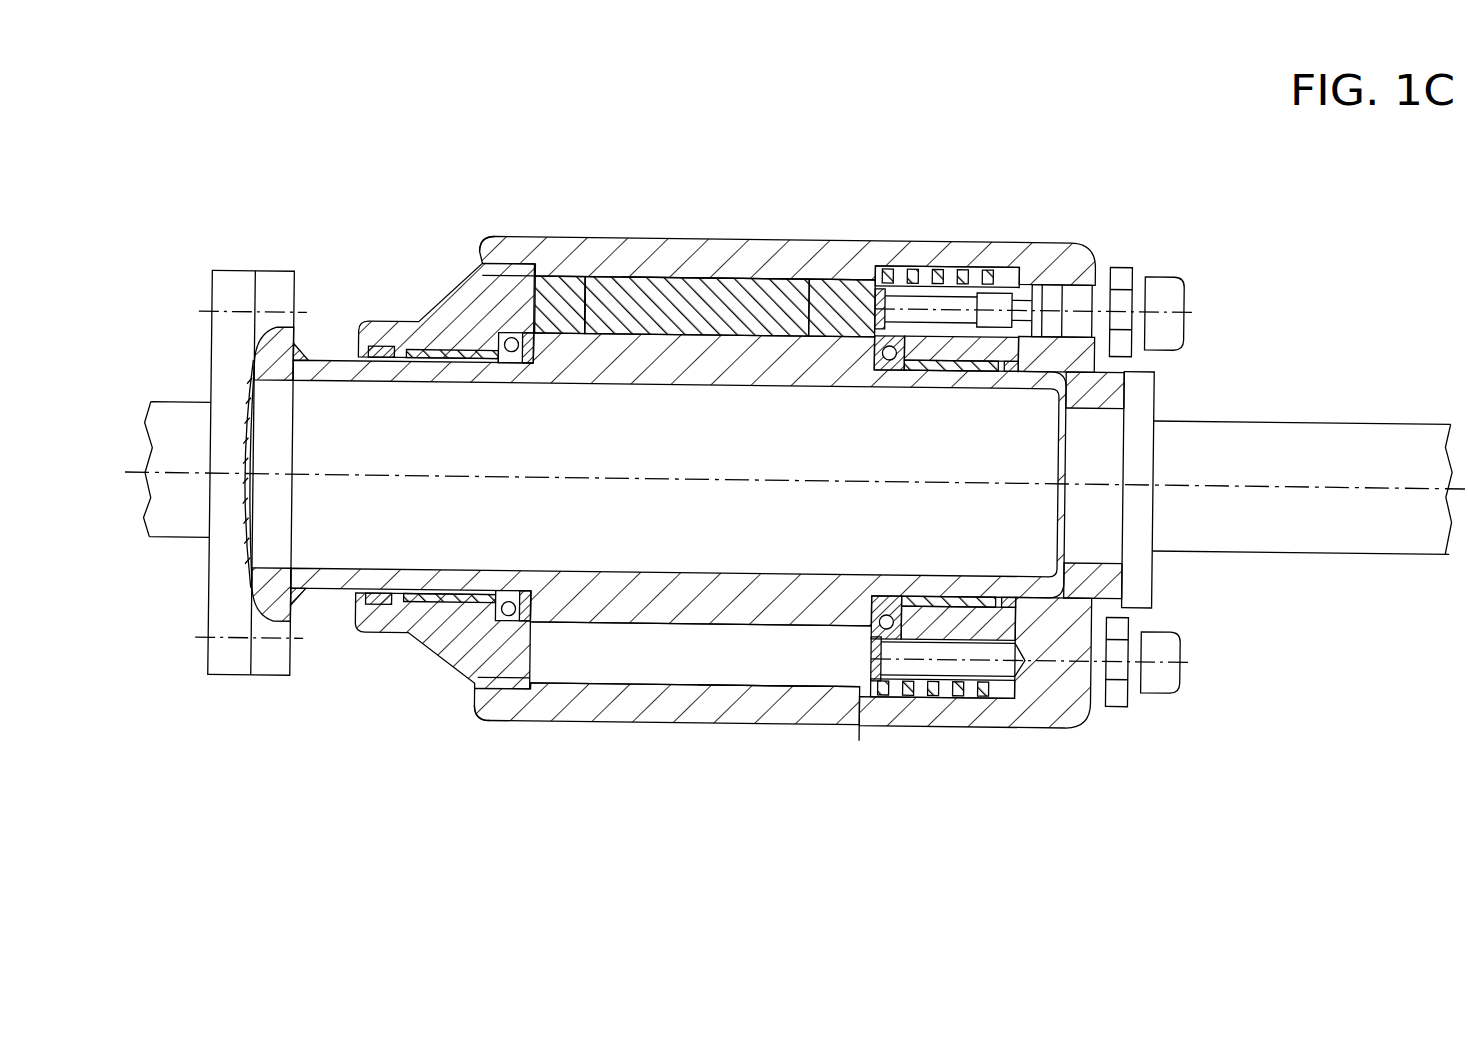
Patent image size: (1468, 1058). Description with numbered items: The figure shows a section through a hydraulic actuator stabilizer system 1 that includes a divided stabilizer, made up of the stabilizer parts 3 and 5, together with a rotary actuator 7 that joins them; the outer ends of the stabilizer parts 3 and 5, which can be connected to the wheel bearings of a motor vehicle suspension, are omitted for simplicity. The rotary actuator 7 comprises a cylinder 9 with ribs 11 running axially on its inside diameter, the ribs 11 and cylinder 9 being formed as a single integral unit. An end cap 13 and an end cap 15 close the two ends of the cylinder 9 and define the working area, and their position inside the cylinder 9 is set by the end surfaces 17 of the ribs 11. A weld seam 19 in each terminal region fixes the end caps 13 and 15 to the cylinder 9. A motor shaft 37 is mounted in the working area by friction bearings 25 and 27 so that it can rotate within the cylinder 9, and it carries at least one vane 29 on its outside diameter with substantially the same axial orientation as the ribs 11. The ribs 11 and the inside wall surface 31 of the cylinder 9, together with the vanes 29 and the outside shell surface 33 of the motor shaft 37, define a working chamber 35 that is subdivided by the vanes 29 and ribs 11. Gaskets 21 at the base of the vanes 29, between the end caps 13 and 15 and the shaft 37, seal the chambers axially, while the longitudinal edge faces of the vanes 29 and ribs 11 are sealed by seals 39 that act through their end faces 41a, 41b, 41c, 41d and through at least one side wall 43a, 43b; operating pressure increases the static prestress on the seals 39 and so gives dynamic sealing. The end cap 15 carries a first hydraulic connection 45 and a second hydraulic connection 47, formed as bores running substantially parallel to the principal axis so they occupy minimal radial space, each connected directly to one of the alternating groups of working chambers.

The hydraulic actuator stabilizer system 1 is at (335, 752).
The stabilizer part 3 is at (180, 548).
The stabilizer part 5 is at (1330, 556).
The rotary actuator 7 is at (703, 737).
The cylinder 9 is at (553, 713).
The ribs 11 is at (718, 656).
The end cap 13 is at (418, 340).
The end cap 15 is at (1075, 690).
The end surfaces 17 is at (548, 290).
The weld seam 19 is at (462, 268).
The gaskets 21 is at (600, 300).
The friction bearing 25 is at (992, 342).
The friction bearing 27 is at (412, 348).
The vane 29 is at (520, 278).
The inside wall surface 31 is at (680, 262).
The outside shell surface 33 is at (636, 628).
The working chamber 35 is at (800, 655).
The motor shaft 37 is at (277, 413).
The seals 39 is at (722, 300).
The end face 41a is at (875, 290).
The end face 41b is at (398, 330).
The end face 41c is at (650, 272).
The end face 41d is at (623, 345).
The side wall 43a is at (752, 270).
The side wall 43b is at (800, 300).
The first hydraulic connection 45 is at (1208, 275).
The second hydraulic connection 47 is at (1165, 668).